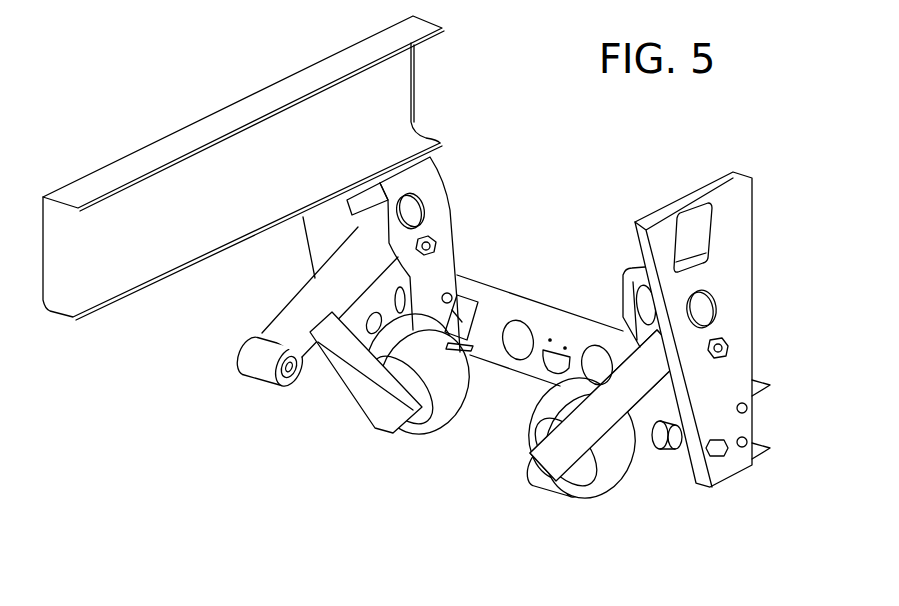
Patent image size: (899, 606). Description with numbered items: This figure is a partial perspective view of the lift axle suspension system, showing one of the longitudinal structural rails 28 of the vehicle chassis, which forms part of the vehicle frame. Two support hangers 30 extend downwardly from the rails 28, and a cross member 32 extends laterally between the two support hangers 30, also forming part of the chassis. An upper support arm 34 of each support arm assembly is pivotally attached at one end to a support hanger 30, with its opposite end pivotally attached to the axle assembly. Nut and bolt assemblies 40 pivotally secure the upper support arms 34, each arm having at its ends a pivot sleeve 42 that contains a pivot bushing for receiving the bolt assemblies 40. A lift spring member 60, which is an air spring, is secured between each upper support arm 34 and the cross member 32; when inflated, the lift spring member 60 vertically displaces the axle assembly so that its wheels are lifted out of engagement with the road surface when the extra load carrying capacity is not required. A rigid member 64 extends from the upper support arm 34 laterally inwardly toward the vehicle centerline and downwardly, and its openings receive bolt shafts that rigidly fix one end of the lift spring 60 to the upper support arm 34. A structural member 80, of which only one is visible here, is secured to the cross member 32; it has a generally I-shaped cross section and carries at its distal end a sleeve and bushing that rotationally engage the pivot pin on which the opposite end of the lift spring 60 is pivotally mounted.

The structural rail 28 is at (318, 72).
The support hanger 30 is at (440, 215).
The cross member 32 is at (554, 305).
The upper support arm 34 is at (303, 300).
The nut and bolt assembly 40 is at (430, 245).
The pivot sleeve 42 is at (257, 372).
The lift spring member 60 is at (448, 420).
The rigid member 64 is at (352, 397).
The structural member 80 is at (477, 290).